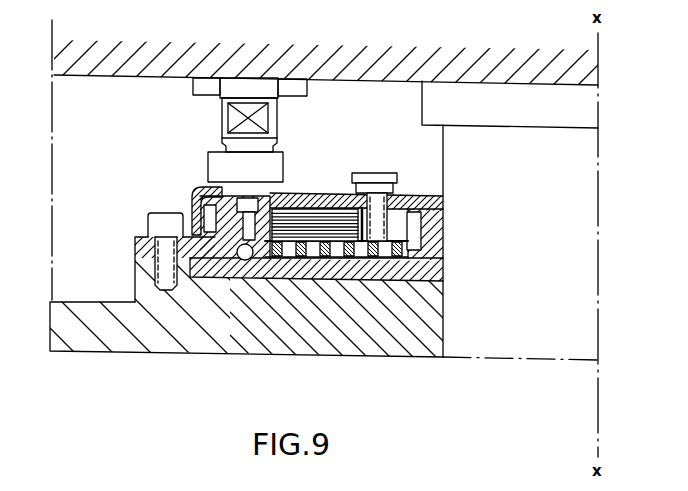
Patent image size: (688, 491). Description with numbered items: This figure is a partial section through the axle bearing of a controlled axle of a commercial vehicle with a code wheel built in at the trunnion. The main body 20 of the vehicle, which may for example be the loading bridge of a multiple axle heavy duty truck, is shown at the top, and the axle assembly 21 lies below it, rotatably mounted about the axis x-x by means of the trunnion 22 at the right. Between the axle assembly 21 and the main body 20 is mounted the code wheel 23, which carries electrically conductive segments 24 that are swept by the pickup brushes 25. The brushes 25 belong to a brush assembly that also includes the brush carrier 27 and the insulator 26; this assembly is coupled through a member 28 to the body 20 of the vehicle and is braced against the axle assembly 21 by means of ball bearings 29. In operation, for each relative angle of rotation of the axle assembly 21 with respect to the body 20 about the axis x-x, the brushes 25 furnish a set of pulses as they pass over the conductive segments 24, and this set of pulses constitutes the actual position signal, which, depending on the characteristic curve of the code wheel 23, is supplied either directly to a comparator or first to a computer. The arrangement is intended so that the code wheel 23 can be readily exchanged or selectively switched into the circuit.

The main body 20 is at (151, 56).
The axle assembly 21 is at (162, 340).
The trunnion 22 is at (505, 348).
The code wheel 23 is at (313, 259).
The electrically conductive segments 24 is at (276, 262).
The pickup brushes 25 is at (295, 227).
The insulator 26 is at (342, 207).
The brush carrier 27 is at (413, 200).
The member 28 is at (223, 167).
The ball bearings 29 is at (243, 263).